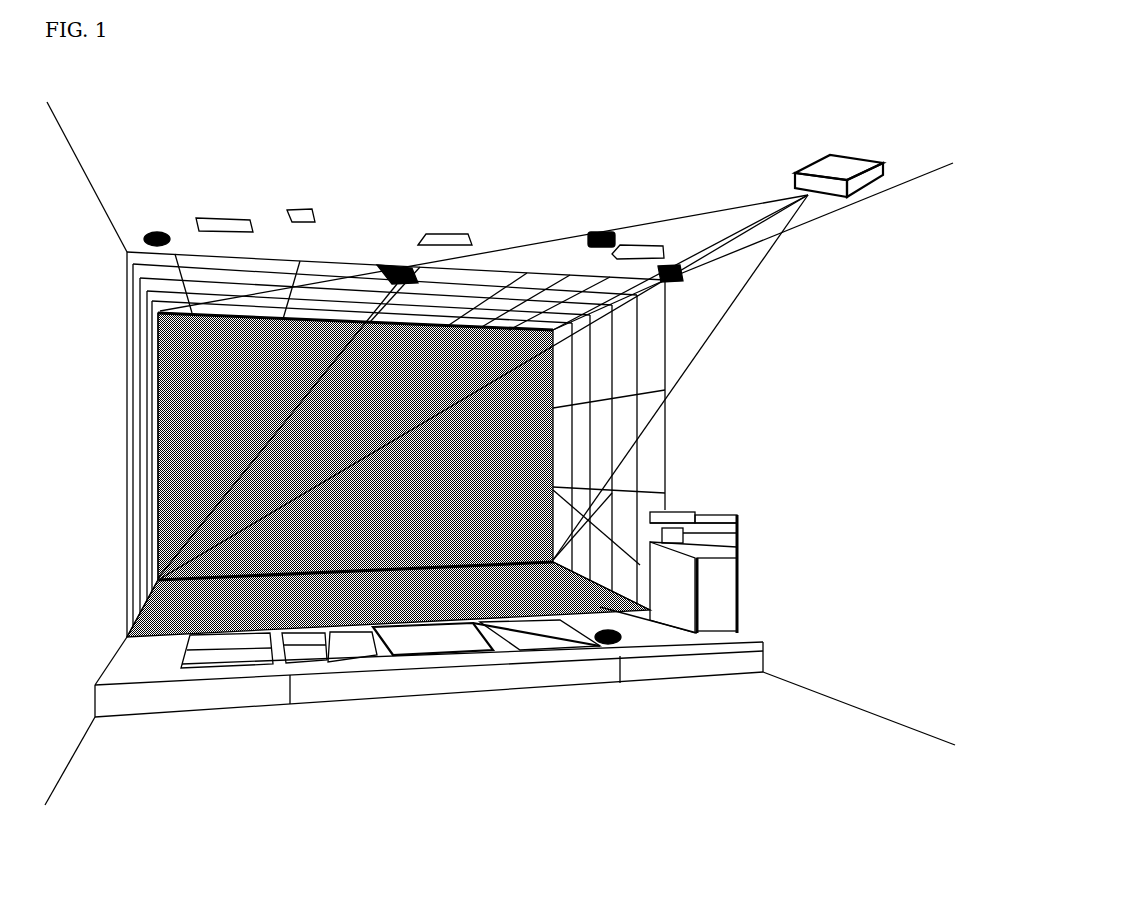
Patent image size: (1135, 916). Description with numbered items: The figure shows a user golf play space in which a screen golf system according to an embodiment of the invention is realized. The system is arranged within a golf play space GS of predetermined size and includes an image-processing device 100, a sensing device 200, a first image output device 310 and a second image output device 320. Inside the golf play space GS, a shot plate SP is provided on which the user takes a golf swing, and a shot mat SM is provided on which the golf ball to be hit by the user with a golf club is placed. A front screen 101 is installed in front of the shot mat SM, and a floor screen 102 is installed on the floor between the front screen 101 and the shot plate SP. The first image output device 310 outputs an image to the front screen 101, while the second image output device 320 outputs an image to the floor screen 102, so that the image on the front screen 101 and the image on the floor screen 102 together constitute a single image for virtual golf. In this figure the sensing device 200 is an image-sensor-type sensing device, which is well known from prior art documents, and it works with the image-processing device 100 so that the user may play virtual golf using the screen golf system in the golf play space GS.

The front screen 101 is at (170, 358).
The floor screen 102 is at (173, 613).
The image-processing device 100 is at (722, 573).
The sensing device 200 is at (666, 265).
The first image output device 310 is at (800, 175).
The second image output device 320 is at (397, 266).
The golf play space GS is at (605, 440).
The shot plate SP is at (442, 643).
The shot mat SM is at (543, 640).